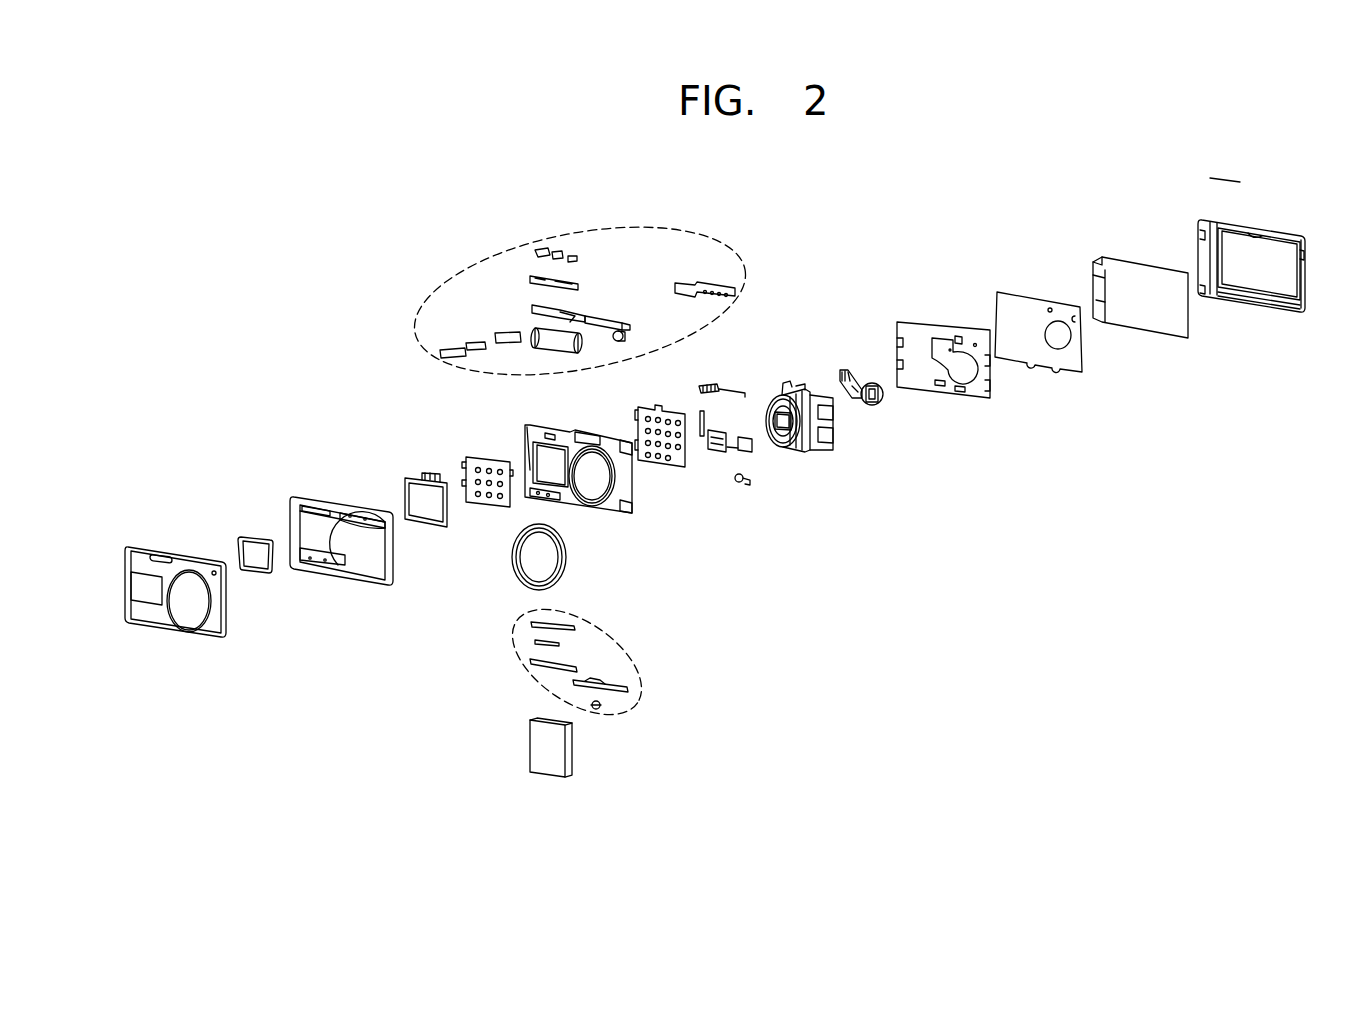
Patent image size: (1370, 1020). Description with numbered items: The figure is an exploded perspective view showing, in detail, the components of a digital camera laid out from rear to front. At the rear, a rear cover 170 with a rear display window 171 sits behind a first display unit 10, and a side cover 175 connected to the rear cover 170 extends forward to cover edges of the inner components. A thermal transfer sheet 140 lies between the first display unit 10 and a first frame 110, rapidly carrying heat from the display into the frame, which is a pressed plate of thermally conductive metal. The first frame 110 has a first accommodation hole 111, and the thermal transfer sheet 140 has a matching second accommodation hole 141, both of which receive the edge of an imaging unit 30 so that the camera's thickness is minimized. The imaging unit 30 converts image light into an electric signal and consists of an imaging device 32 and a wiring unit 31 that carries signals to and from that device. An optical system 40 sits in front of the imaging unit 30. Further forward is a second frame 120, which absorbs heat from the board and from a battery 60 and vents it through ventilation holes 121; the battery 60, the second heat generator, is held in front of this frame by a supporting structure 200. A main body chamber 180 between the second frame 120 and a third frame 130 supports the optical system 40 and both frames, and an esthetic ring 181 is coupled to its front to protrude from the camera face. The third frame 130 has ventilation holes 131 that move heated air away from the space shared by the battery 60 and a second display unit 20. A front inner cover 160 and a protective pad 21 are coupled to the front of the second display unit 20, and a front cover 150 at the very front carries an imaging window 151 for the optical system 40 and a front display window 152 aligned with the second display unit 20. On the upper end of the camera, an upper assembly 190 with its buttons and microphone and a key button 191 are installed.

The first display unit 10 is at (1145, 342).
The second display unit 20 is at (427, 535).
The protective pad 21 is at (257, 533).
The imaging unit 30 is at (869, 440).
The wiring unit 31 is at (857, 398).
The imaging device 32 is at (868, 404).
The optical system 40 is at (802, 447).
The battery 60 is at (547, 777).
The first frame 110 is at (943, 386).
The first accommodation hole 111 is at (942, 340).
The second frame 120 is at (612, 451).
The ventilation holes 121 is at (670, 422).
The third frame 130 is at (485, 505).
The ventilation holes 131 is at (498, 468).
The thermal transfer sheet 140 is at (1038, 352).
The second accommodation hole 141 is at (1060, 327).
The front cover 150 is at (439, 529).
The imaging window 151 is at (210, 598).
The front display window 152 is at (142, 597).
The front inner cover 160 is at (357, 590).
The rear cover 170 is at (1281, 245).
The rear display window 171 is at (1255, 237).
The side cover 175 is at (1307, 273).
The main body chamber 180 is at (618, 478).
The ring 181 is at (567, 560).
The upper assembly 190 is at (565, 233).
The key button 191 is at (1221, 178).
The supporting structure 200 is at (627, 650).